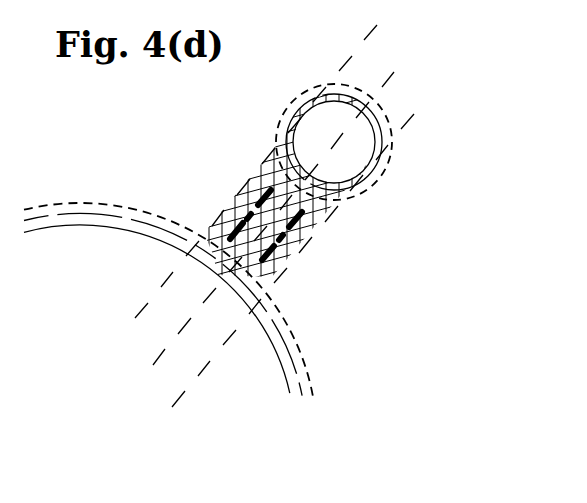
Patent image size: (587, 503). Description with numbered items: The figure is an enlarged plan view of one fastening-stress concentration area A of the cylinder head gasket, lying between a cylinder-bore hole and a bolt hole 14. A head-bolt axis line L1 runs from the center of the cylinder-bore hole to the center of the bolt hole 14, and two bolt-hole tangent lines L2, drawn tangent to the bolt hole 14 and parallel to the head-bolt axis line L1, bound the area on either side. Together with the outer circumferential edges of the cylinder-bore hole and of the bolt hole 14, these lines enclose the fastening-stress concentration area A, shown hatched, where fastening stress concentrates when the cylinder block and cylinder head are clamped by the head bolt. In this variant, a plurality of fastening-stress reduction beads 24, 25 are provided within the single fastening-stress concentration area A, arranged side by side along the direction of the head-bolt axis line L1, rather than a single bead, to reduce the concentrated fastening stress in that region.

The bolt hole 14 is at (363, 166).
The fastening-stress reduction bead 24 is at (260, 192).
The fastening-stress reduction bead 25 is at (292, 225).
The fastening-stress concentration area A is at (240, 207).
The head-bolt axis line L1 is at (135, 382).
The bolt-hole tangent line L2 is at (122, 338).